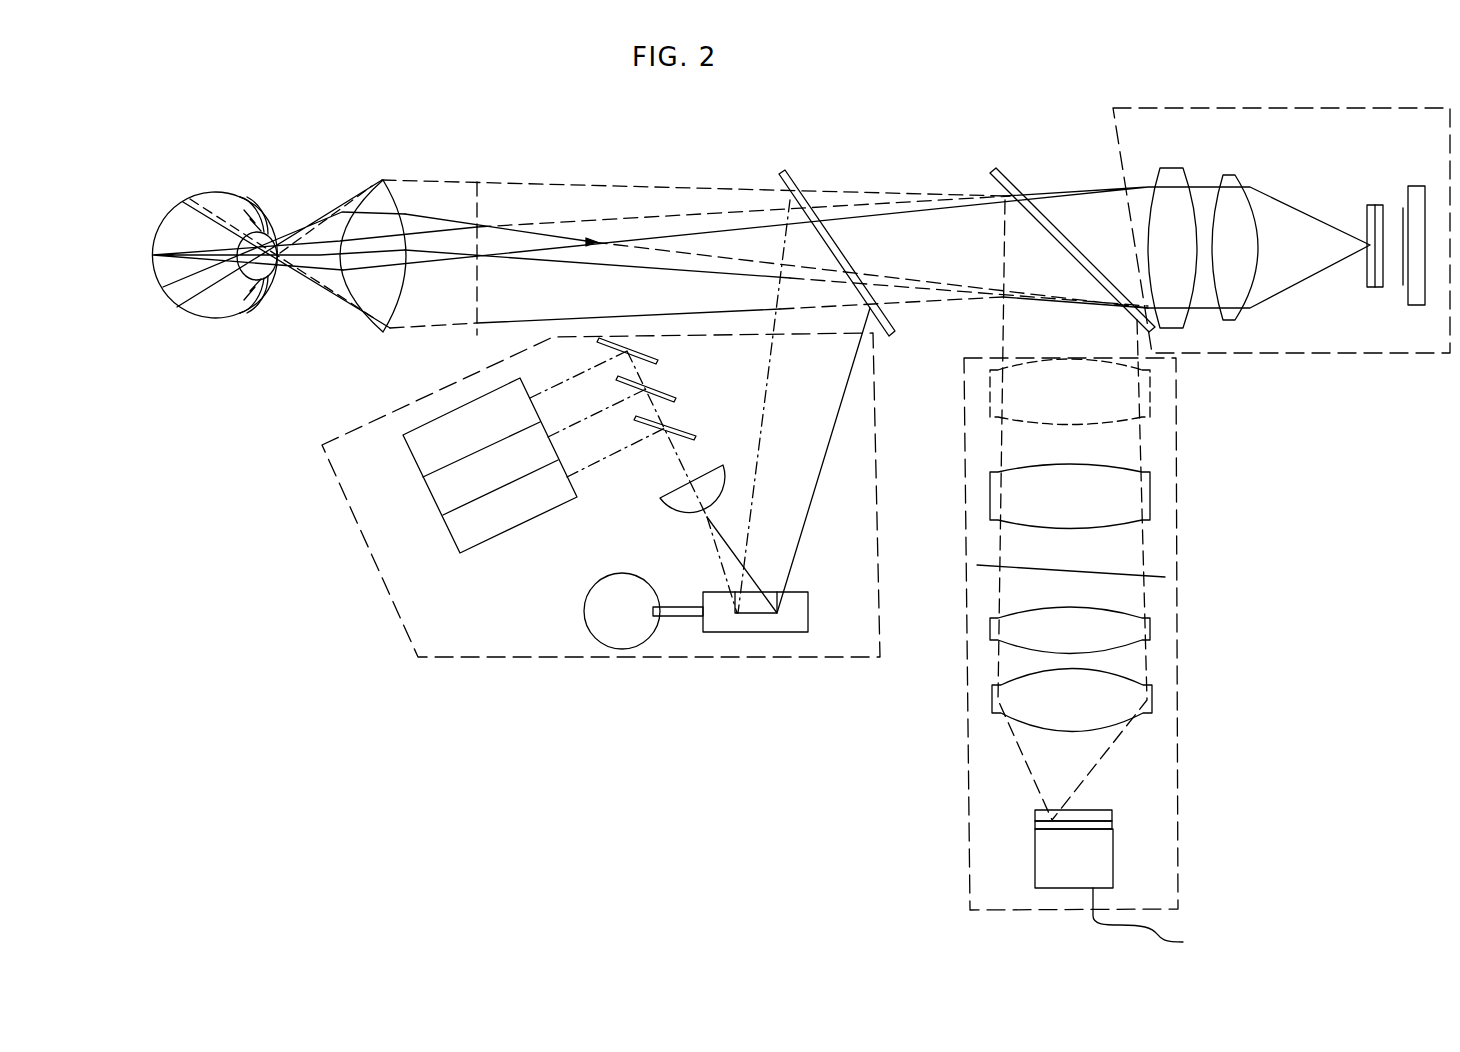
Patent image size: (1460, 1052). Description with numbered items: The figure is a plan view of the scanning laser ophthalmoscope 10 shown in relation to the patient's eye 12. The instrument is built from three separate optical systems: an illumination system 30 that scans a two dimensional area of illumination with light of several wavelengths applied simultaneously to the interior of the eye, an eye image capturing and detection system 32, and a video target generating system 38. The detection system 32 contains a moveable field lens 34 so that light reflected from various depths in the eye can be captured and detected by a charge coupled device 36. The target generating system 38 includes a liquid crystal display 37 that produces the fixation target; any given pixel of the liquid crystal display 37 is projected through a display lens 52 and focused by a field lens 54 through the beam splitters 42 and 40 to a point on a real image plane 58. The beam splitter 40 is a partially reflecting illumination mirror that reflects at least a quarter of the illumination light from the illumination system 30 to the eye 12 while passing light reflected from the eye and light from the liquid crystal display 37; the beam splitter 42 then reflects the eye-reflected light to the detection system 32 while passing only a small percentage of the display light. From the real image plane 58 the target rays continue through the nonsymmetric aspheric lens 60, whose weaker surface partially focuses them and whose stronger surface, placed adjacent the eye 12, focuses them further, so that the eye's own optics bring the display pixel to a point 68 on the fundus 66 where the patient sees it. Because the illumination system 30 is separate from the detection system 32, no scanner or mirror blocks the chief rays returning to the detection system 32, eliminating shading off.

The scanning laser ophthalmoscope 10 is at (928, 122).
The patient's eye 12 is at (230, 322).
The fundus 66 is at (190, 318).
The point on the fundus 68 is at (153, 240).
The nonsymmetric aspheric lens 60 is at (387, 175).
The real image plane 58 is at (482, 180).
The beam splitter 40 is at (794, 175).
The beam splitter 42 is at (1011, 168).
The video target generating system 38 is at (1310, 360).
The field lens 54 is at (1172, 170).
The display lens 52 is at (1232, 176).
The liquid crystal display 37 is at (1377, 207).
The eye image capturing and detection system 32 is at (1135, 571).
The field lens 34 is at (1150, 488).
The charge coupled device 36 is at (1103, 852).
The illumination system 30 is at (513, 662).